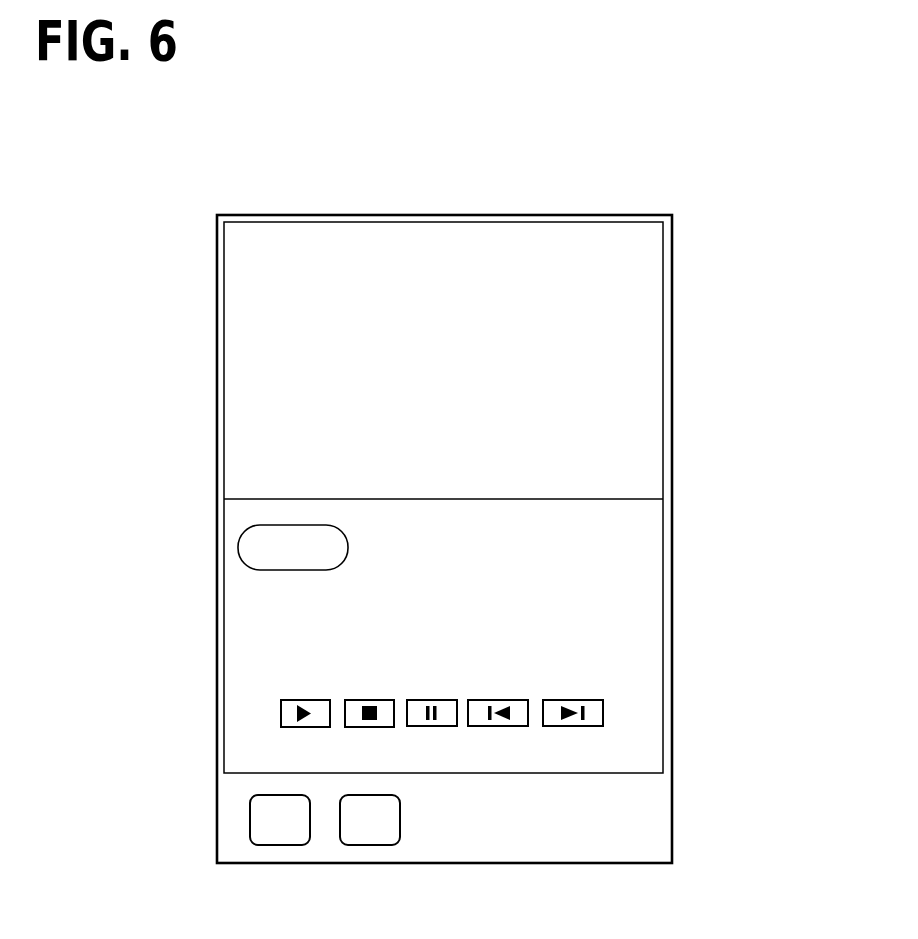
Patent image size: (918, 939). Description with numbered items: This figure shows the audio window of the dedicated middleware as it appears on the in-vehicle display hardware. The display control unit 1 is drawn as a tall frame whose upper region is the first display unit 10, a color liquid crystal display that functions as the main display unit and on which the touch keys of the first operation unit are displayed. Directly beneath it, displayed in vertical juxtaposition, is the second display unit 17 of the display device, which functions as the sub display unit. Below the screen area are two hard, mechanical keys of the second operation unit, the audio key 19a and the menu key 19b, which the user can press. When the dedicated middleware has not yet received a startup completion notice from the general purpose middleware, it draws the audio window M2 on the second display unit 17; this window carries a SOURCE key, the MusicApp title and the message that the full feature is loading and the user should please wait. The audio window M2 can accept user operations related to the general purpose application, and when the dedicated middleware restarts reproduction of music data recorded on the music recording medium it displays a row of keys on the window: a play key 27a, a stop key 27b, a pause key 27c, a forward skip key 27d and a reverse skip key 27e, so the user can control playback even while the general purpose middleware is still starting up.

The display control unit 1 is at (716, 308).
The first display unit 10 is at (663, 372).
The second display unit 17 is at (663, 587).
The audio window M2 is at (618, 645).
The audio key 19a is at (280, 845).
The menu key 19b is at (370, 845).
The play key 27a is at (298, 727).
The stop key 27b is at (368, 727).
The pause key 27c is at (433, 727).
The forward skip key 27d is at (500, 727).
The reverse skip key 27e is at (570, 727).